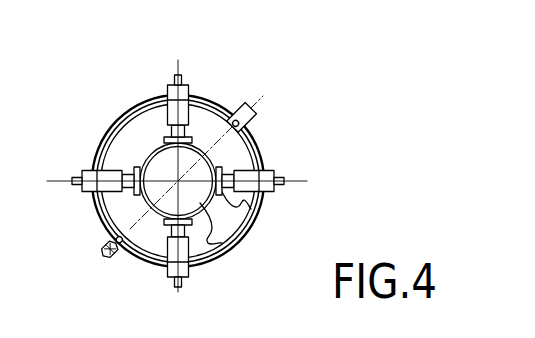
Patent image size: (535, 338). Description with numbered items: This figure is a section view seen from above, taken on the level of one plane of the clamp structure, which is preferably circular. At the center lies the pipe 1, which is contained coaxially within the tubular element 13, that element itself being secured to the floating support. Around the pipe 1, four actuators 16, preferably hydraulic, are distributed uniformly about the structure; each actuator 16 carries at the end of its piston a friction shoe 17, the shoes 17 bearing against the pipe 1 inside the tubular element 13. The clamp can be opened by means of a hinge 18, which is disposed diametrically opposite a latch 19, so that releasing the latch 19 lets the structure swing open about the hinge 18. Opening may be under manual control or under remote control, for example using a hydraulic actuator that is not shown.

The pipe 1 is at (206, 256).
The tubular element 13 is at (125, 110).
The hydraulic actuator 16 is at (274, 169).
The friction shoe 17 is at (257, 208).
The hinge 18 is at (108, 259).
The latch 19 is at (233, 102).